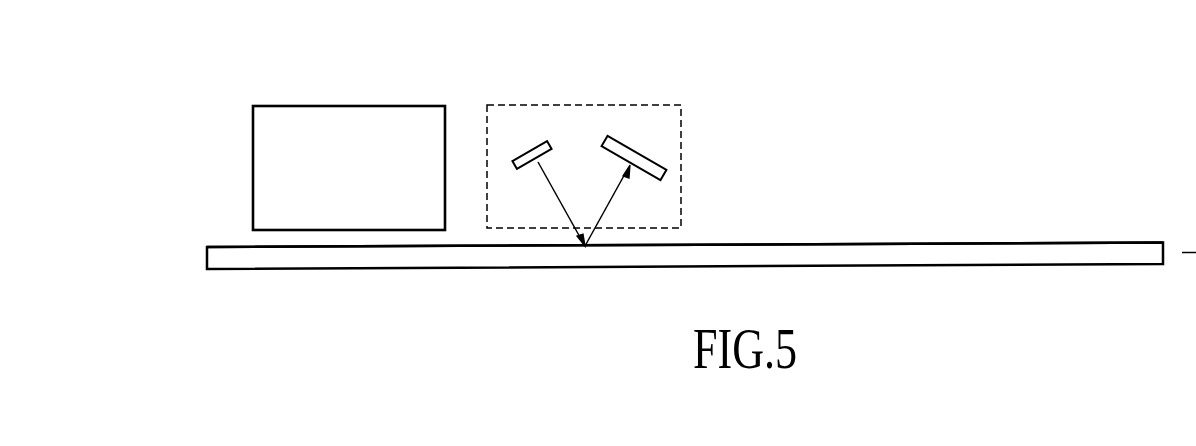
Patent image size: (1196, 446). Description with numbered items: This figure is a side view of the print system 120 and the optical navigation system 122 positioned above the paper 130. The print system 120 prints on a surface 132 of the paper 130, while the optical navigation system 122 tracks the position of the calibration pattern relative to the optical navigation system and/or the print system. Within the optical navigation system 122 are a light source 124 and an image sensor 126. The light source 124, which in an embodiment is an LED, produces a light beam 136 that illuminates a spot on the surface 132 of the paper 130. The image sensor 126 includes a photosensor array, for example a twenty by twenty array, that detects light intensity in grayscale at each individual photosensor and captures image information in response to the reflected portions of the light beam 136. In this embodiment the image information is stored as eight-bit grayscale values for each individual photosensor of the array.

The print system 120 is at (323, 105).
The optical navigation system 122 is at (558, 104).
The light source 124 is at (529, 147).
The image sensor 126 is at (652, 153).
The paper 130 is at (1057, 258).
The surface 132 is at (948, 243).
The light beam 136 is at (553, 202).